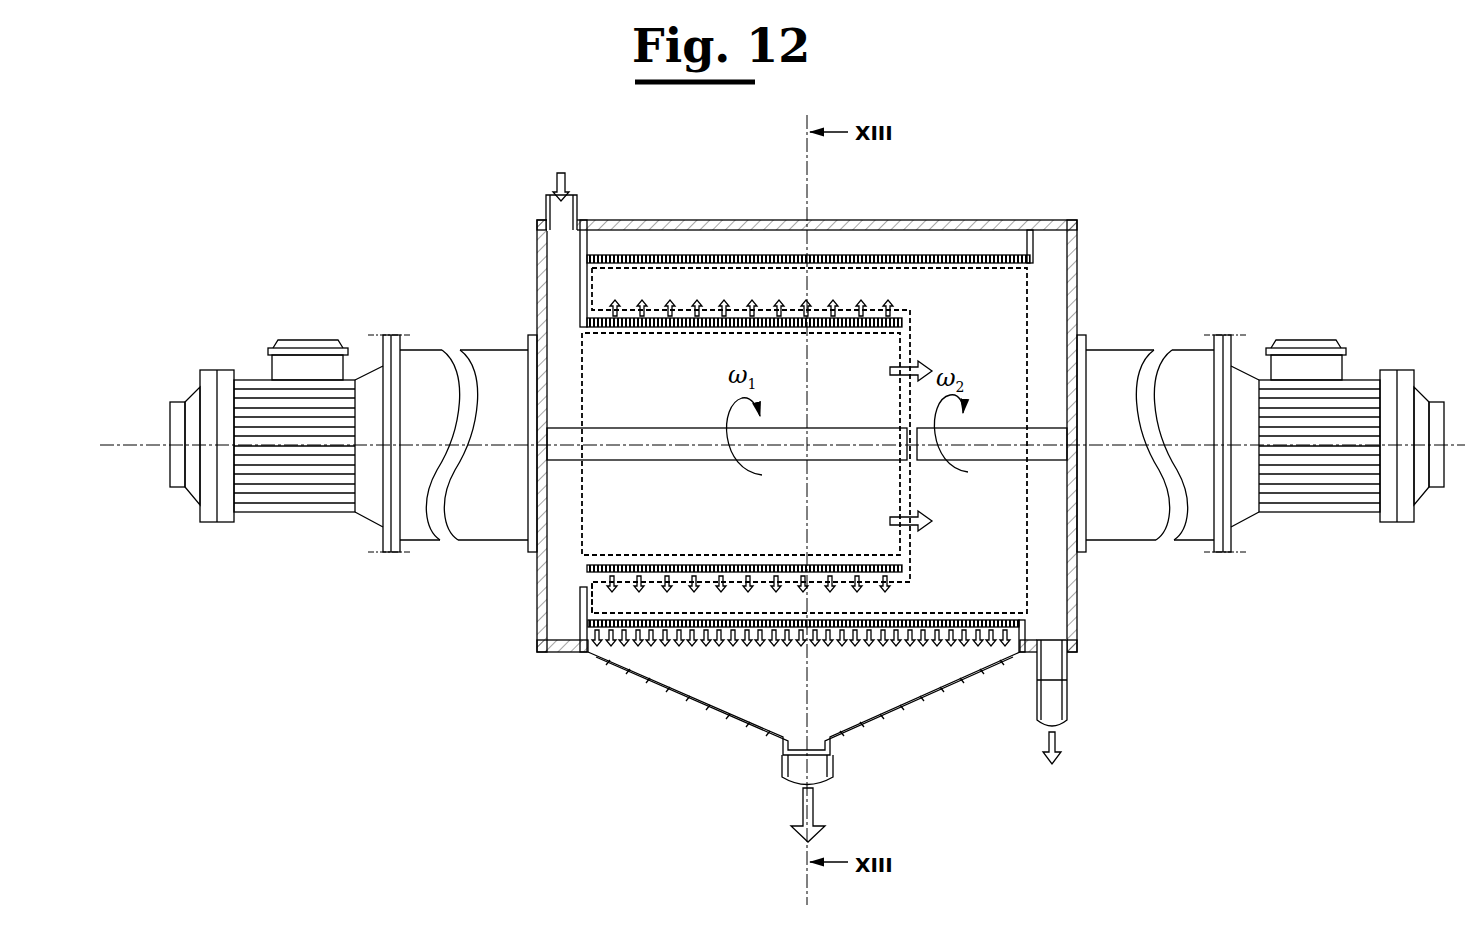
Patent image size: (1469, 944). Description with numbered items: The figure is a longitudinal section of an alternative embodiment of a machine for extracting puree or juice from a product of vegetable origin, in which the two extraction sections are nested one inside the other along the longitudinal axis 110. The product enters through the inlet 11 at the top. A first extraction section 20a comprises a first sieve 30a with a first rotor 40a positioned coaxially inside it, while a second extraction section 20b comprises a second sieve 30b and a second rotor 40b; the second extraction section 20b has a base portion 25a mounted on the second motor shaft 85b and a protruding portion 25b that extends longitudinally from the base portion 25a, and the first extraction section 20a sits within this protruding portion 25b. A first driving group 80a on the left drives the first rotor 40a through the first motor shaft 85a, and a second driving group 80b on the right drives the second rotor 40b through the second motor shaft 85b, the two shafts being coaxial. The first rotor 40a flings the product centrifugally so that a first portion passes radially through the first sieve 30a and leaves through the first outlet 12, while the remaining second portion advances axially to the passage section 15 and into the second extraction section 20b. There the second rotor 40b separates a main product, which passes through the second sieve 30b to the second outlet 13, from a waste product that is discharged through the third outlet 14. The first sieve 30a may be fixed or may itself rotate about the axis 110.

The inlet 11 is at (543, 207).
The first outlet 12 is at (650, 594).
The second outlet 13 is at (936, 657).
The third outlet 14 is at (1069, 697).
The passage section 15 is at (902, 397).
The first extraction section 20a is at (652, 305).
The second extraction section 20b is at (997, 246).
The base portion 25a is at (1000, 310).
The protruding portion 25b is at (853, 282).
The first sieve 30a is at (731, 288).
The second sieve 30b is at (921, 246).
The first rotor 40a is at (570, 547).
The second rotor 40b is at (1044, 591).
The first driving group 80a is at (227, 330).
The second driving group 80b is at (1338, 530).
The first motor shaft 85a is at (562, 417).
The second motor shaft 85b is at (1042, 407).
The longitudinal axis 110 is at (145, 442).